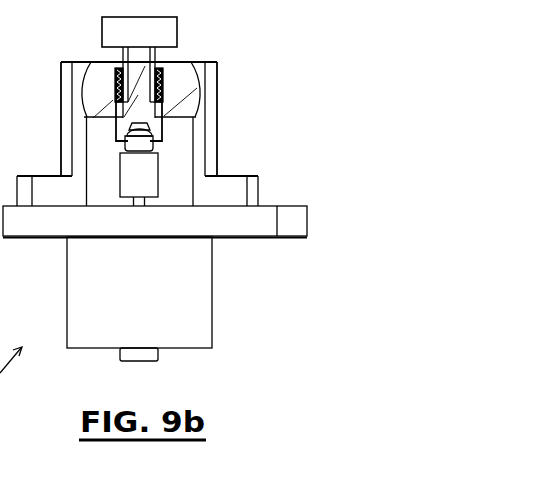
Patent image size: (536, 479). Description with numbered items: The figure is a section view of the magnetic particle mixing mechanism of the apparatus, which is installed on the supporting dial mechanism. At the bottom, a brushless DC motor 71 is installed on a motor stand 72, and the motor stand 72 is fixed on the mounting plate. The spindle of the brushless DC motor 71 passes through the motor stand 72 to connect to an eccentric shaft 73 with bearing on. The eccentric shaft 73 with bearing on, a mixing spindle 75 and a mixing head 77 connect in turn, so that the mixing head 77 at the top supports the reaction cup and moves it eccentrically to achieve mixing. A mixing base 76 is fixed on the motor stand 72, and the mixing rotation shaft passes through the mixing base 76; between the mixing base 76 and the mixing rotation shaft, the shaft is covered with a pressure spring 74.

The brushless DC motor 71 is at (195, 306).
The motor stand 72 is at (251, 222).
The eccentric shaft with bearing on 73 is at (138, 170).
The pressure spring 74 is at (163, 85).
The mixing spindle 75 is at (140, 63).
The mixing base 76 is at (223, 186).
The mixing head 77 is at (160, 32).